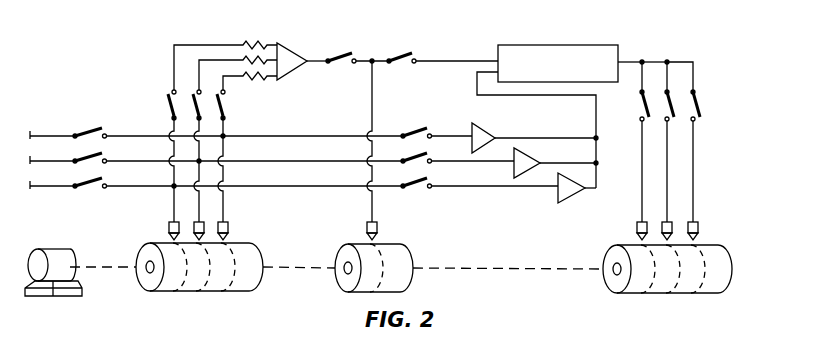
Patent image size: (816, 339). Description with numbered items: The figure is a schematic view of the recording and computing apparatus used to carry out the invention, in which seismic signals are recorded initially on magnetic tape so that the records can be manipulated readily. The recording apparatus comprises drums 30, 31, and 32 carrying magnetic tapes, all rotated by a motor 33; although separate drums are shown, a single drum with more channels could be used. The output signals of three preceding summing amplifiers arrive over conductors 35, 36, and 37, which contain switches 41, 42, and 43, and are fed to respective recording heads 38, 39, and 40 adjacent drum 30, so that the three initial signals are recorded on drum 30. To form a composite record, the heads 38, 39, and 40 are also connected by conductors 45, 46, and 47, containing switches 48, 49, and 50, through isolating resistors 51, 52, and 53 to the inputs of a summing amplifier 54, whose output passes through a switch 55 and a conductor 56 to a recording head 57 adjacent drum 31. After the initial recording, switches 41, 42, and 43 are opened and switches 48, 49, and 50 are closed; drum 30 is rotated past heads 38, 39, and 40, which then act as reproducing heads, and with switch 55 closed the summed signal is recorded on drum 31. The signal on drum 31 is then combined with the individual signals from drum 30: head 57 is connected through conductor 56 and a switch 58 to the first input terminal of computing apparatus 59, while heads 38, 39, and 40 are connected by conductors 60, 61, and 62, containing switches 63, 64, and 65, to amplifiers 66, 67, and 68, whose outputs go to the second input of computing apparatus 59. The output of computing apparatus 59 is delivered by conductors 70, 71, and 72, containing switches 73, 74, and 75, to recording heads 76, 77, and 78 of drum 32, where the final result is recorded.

The drum 30 is at (254, 258).
The drum 31 is at (408, 258).
The drum 32 is at (730, 262).
The motor 33 is at (34, 262).
The conductor 35 is at (32, 131).
The conductor 36 is at (32, 157).
The conductor 37 is at (32, 182).
The recording head 38 is at (229, 226).
The recording head 39 is at (204, 222).
The recording head 40 is at (169, 225).
The switch 41 is at (90, 130).
The switch 42 is at (78, 156).
The switch 43 is at (78, 181).
The conductor 45 is at (223, 148).
The conductor 46 is at (199, 145).
The conductor 47 is at (174, 176).
The switch 48 is at (223, 108).
The switch 49 is at (199, 118).
The switch 50 is at (168, 106).
The isolating resistor 51 is at (262, 79).
The isolating resistor 52 is at (270, 63).
The isolating resistor 53 is at (245, 44).
The summing amplifier 54 is at (284, 47).
The switch 55 is at (336, 56).
The conductor 56 is at (372, 106).
The recording head 57 is at (378, 229).
The switch 58 is at (397, 56).
The computing apparatus 59 is at (497, 50).
The conductor 60 is at (325, 136).
The conductor 61 is at (328, 161).
The conductor 62 is at (340, 186).
The switch 63 is at (415, 130).
The switch 64 is at (415, 155).
The switch 65 is at (415, 181).
The amplifier 66 is at (480, 126).
The amplifier 67 is at (528, 151).
The amplifier 68 is at (570, 196).
The conductor 70 is at (696, 76).
The conductor 71 is at (670, 72).
The conductor 72 is at (645, 70).
The switch 73 is at (699, 107).
The switch 74 is at (664, 107).
The switch 75 is at (641, 104).
The recording head 76 is at (698, 229).
The recording head 77 is at (672, 223).
The recording head 78 is at (638, 228).